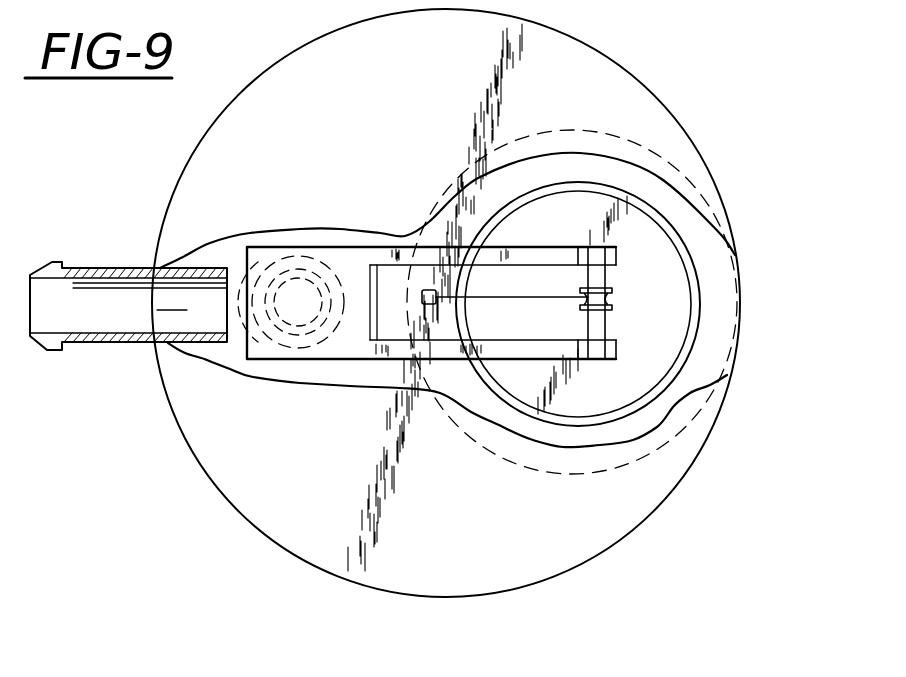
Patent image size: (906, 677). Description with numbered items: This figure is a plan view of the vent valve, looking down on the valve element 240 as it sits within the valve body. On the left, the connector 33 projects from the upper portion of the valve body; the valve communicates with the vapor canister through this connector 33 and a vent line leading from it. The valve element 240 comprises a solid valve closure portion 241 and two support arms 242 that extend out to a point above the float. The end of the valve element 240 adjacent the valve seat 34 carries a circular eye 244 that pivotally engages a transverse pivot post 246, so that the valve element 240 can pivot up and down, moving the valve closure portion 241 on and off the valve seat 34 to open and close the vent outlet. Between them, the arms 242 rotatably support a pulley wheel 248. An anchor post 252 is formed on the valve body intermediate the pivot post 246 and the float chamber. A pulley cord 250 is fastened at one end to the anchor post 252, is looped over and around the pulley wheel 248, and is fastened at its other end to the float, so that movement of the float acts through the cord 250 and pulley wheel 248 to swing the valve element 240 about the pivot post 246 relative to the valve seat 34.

The connector 33 is at (100, 343).
The valve seat 34 is at (262, 233).
The valve element 240 is at (353, 262).
The valve closure portion 241 is at (343, 340).
The support arms 242 is at (527, 250).
The circular eye 244 is at (617, 350).
The pivot post 246 is at (605, 323).
The pulley wheel 248 is at (612, 283).
The pulley cord 250 is at (508, 305).
The anchor post 252 is at (427, 293).